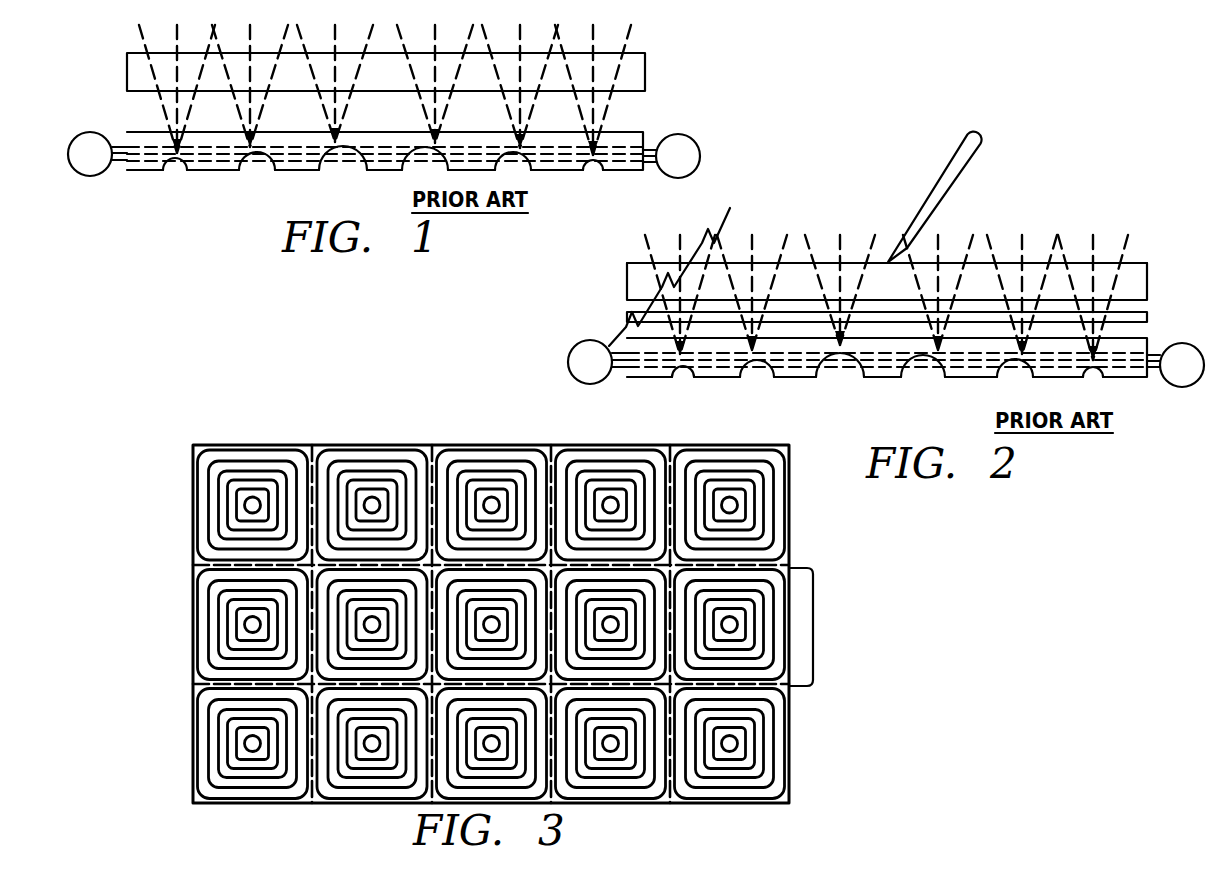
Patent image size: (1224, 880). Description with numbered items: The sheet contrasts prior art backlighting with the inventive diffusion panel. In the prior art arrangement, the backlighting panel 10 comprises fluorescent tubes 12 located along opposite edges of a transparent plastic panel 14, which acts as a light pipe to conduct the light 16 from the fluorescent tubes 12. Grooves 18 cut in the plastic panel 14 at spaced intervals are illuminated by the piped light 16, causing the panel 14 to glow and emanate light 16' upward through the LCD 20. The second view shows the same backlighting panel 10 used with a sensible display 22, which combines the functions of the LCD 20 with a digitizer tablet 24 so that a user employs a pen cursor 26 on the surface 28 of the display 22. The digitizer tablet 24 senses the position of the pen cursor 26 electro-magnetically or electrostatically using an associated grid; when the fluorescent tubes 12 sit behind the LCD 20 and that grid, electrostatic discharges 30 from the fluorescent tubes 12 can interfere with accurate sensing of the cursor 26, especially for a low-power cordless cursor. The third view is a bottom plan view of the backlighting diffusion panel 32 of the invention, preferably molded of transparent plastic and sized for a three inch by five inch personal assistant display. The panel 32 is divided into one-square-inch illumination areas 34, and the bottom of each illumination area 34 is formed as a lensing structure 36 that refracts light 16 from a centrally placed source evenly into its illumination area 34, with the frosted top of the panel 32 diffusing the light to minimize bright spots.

In FIG. 1, the backlighting panel 10 is at (385, 181).
In FIG. 2, the backlighting panel 10 is at (887, 387).
In FIG. 1, the fluorescent tubes 12 is at (88, 177).
In FIG. 2, the fluorescent tubes 12 is at (585, 384).
In FIG. 1, the transparent plastic panel 14 is at (383, 178).
In FIG. 2, the transparent plastic panel 14 is at (887, 386).
In FIG. 1, the light 16 is at (363, 124).
In FIG. 2, the light 16 is at (903, 332).
In FIG. 1, the emanated light 16' is at (411, 90).
In FIG. 2, the emanated light 16' is at (893, 273).
In FIG. 1, the grooves 18 is at (345, 152).
In FIG. 2, the grooves 18 is at (843, 355).
In FIG. 1, the LCD 20 is at (645, 80).
In FIG. 2, the LCD 20 is at (864, 271).
In FIG. 2, the sensible display 22 is at (616, 278).
In FIG. 2, the digitizer tablet 24 is at (616, 312).
In FIG. 2, the pen cursor 26 is at (935, 196).
In FIG. 2, the surface 28 is at (1033, 265).
In FIG. 2, the electrostatic discharges 30 is at (610, 342).
In FIG. 3, the backlighting diffusion panel 32 is at (556, 624).
In FIG. 3, the illumination areas 34 is at (813, 622).
In FIG. 3, the lensing structure 36 is at (750, 745).